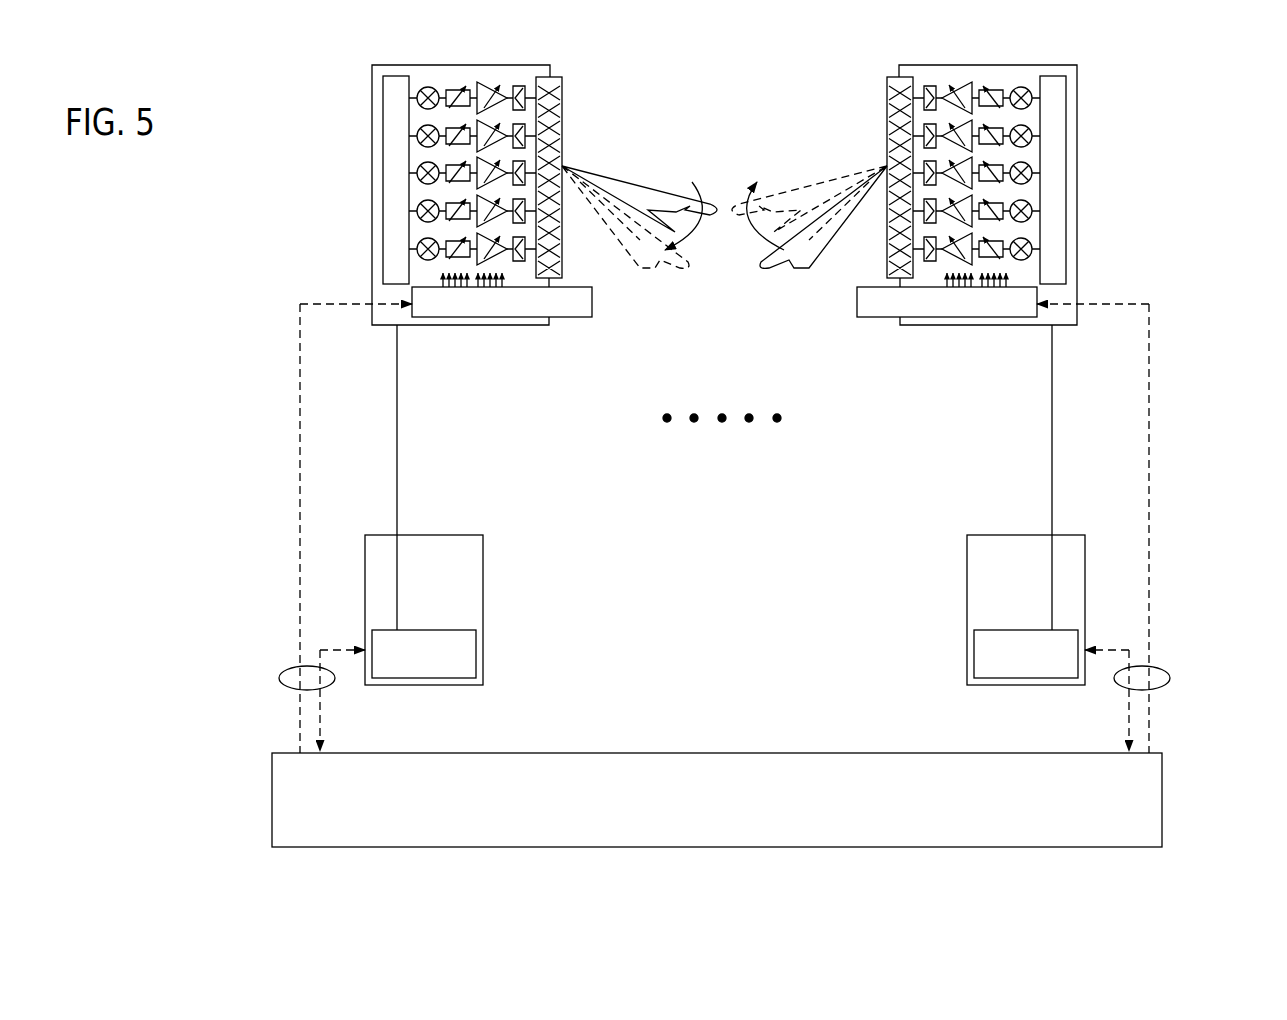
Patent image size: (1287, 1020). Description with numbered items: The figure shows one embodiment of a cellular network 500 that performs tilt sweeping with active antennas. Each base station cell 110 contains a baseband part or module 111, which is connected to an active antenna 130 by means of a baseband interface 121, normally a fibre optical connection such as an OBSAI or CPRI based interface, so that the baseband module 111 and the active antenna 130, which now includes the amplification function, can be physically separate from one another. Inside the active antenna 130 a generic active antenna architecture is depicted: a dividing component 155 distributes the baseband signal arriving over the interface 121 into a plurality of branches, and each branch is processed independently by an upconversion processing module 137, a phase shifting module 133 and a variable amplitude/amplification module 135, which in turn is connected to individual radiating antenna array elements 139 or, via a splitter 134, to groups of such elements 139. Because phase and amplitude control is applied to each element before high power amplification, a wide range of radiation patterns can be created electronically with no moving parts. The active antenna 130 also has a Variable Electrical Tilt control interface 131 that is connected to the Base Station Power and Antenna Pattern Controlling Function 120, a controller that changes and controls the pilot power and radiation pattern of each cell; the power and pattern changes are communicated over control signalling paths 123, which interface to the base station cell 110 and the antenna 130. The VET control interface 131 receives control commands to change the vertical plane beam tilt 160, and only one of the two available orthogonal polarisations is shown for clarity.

The base station cell 110 is at (386, 530).
The baseband part or module 111 is at (385, 640).
The Base Station Power and Antenna Pattern Controlling Function 120 is at (678, 775).
The baseband interface 121 is at (396, 480).
The control signalling paths 123 is at (280, 677).
The active antenna 130 is at (553, 63).
The Variable Electrical Tilt control interface 131 is at (592, 310).
The phase shifting module 133 is at (442, 105).
The splitter 134 is at (535, 100).
The variable amplitude/amplification module 135 is at (498, 110).
The upconversion processing module 137 is at (408, 107).
The radiating antenna array elements 139 is at (565, 266).
The dividing component 155 is at (398, 90).
The vertical plane beam tilt 160 is at (648, 180).
The cellular network 500 is at (748, 580).